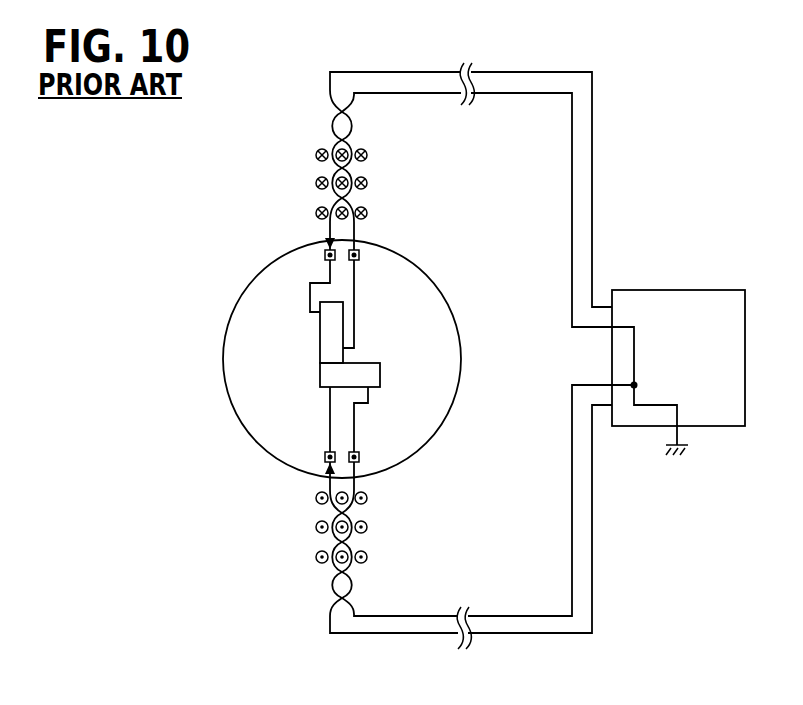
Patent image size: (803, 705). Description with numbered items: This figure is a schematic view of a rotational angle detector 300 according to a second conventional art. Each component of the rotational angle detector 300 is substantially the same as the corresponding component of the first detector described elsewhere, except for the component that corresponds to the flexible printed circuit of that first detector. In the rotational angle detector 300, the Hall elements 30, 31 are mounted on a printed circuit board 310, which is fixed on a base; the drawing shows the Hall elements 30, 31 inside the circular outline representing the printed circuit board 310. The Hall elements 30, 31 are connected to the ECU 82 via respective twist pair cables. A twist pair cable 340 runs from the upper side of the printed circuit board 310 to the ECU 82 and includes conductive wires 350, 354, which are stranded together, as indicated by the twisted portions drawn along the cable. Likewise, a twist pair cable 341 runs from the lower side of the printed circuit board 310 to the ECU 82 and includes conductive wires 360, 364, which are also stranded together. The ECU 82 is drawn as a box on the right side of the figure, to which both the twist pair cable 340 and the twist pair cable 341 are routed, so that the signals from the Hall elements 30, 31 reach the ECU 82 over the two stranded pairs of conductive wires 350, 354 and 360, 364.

The rotational angle detector 300 is at (728, 110).
The printed circuit board 310 is at (250, 298).
The Hall element 30 is at (320, 338).
The Hall element 31 is at (380, 374).
The twist pair cable 340 is at (426, 98).
The twist pair cable 341 is at (422, 612).
The conductive wire 350 is at (328, 80).
The conductive wire 354 is at (357, 94).
The conductive wire 360 is at (329, 630).
The conductive wire 364 is at (360, 613).
The ECU 82 is at (655, 290).